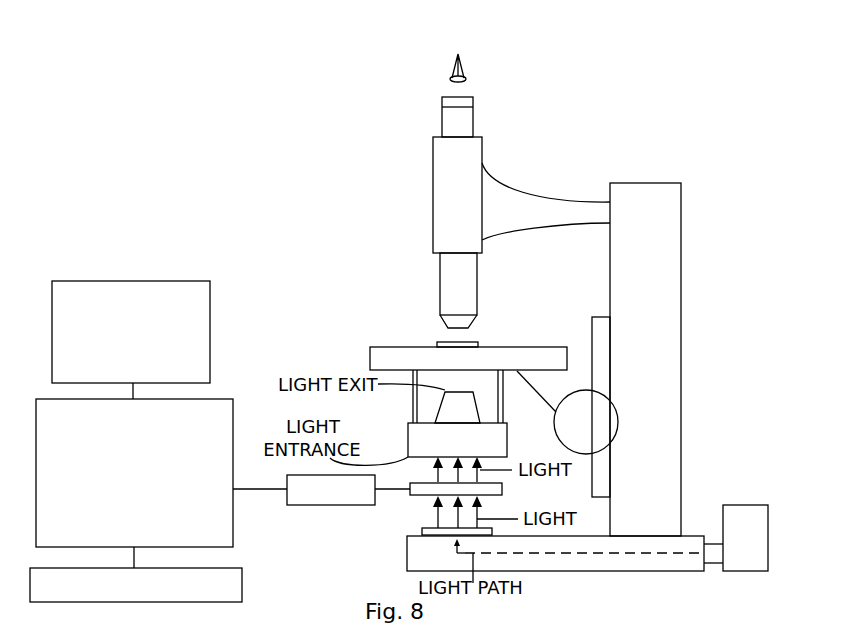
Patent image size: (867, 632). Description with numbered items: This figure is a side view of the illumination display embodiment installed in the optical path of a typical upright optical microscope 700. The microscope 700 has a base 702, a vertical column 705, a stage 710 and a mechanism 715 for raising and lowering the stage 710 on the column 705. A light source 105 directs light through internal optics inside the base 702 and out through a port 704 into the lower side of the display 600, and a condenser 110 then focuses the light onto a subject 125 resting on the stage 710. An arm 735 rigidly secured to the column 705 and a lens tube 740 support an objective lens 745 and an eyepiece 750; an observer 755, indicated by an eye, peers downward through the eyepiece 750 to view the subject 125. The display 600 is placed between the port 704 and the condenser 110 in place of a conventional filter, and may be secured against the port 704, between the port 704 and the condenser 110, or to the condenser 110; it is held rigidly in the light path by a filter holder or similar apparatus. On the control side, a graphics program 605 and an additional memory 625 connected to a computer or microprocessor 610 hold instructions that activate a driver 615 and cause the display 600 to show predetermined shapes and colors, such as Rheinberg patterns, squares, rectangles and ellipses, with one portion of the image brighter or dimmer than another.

The light source 105 is at (746, 571).
The condenser 110 is at (507, 437).
The subject 125 is at (440, 341).
The display 600 is at (502, 490).
The graphics program 605 is at (242, 584).
The computer or microprocessor 610 is at (233, 405).
The driver 615 is at (299, 505).
The additional memory 625 is at (96, 281).
The optical microscope 700 is at (382, 220).
The base 702 is at (563, 571).
The port 704 is at (422, 532).
The vertical column 705 is at (681, 405).
The stage 710 is at (368, 358).
The mechanism for raising and lowering stage 715 is at (592, 375).
The arm 735 is at (559, 200).
The lens tube 740 is at (433, 160).
The objective lens 745 is at (440, 283).
The eyepiece 750 is at (442, 120).
The observer 755 is at (468, 75).